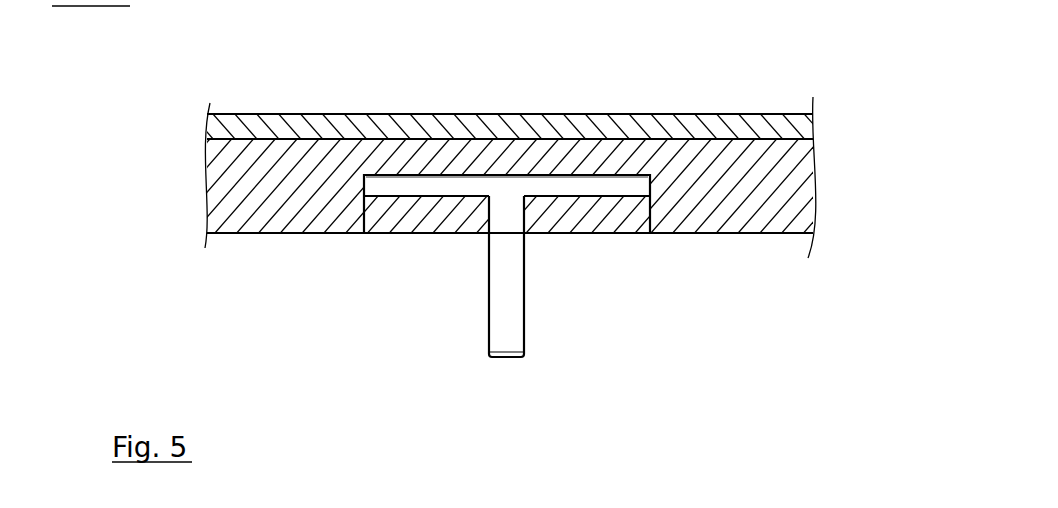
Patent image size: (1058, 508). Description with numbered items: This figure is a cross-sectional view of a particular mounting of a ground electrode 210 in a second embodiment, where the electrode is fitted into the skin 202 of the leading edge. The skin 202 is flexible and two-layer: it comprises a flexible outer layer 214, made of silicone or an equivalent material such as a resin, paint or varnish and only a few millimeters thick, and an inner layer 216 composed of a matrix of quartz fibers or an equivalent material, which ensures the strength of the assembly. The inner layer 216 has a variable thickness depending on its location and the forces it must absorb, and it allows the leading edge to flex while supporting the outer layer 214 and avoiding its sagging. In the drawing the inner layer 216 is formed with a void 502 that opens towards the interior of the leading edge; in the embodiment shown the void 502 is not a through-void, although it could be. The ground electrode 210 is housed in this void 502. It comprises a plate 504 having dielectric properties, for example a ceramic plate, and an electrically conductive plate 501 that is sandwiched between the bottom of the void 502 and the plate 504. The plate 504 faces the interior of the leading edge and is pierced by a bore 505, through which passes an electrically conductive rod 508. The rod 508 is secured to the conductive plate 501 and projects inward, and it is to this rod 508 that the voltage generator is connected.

The skin 202 is at (529, 129).
The outer layer 214 is at (808, 132).
The inner layer 216 is at (792, 193).
The ground electrode 210 is at (471, 203).
The electrically conductive plate 501 is at (380, 187).
The void 502 is at (507, 132).
The plate 504 is at (578, 217).
The bore 505 is at (462, 234).
The electrically conductive rod 508 is at (508, 332).